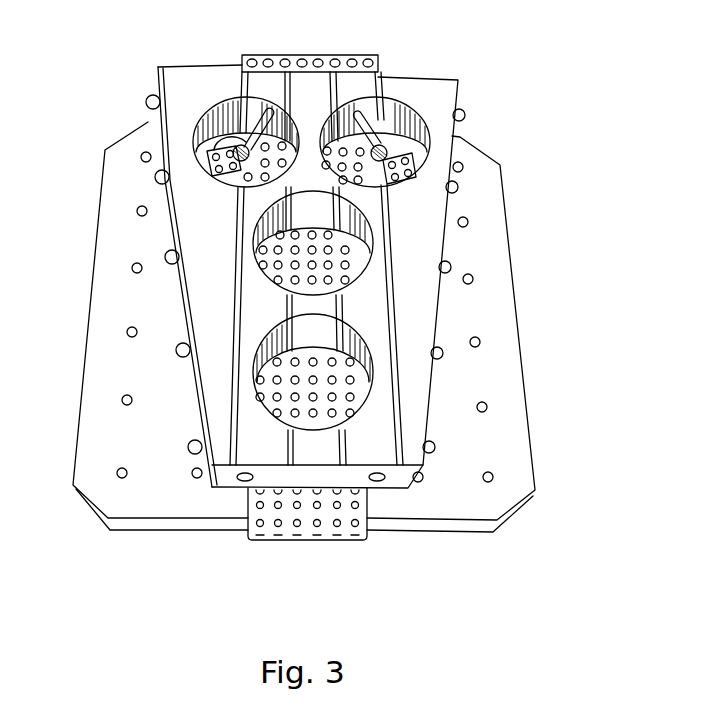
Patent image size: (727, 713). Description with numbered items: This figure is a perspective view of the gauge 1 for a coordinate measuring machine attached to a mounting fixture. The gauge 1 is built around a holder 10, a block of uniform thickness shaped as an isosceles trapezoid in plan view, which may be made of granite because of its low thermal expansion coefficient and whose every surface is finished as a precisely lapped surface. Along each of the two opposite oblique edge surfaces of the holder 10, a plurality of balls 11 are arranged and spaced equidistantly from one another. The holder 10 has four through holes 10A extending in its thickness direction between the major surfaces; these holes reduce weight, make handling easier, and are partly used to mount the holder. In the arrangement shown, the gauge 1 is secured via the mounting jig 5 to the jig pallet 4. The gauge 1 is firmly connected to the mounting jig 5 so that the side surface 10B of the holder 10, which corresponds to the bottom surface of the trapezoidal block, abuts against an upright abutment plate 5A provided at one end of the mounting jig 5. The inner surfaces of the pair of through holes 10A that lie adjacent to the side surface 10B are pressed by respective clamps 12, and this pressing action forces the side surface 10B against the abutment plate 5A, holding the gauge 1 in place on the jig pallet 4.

The gauge 1 is at (425, 56).
The jig pallet 4 is at (503, 368).
The mounting jig 5 is at (328, 527).
The abutment plate 5A is at (312, 55).
The holder 10 is at (430, 237).
The through holes 10A is at (195, 126).
The side surface 10B is at (202, 58).
The balls 11 is at (180, 348).
The clamps 12 is at (242, 113).